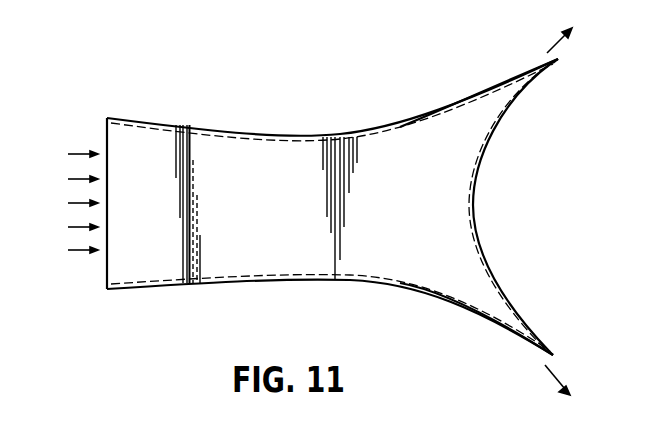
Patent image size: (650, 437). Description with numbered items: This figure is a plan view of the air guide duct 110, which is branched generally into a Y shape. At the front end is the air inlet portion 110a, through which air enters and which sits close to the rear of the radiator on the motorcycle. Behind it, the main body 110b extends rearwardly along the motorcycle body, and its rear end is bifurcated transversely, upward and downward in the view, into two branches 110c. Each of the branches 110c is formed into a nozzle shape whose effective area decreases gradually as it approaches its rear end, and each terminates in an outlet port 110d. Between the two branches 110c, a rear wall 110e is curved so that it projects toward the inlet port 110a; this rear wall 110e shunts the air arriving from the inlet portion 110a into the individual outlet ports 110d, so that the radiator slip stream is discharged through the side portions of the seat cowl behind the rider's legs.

The air guide duct 110 is at (302, 220).
The air inlet portion 110a is at (107, 264).
The main body 110b is at (268, 287).
The branches 110c is at (488, 88).
The outlet ports 110d is at (543, 53).
The rear wall 110e is at (482, 221).